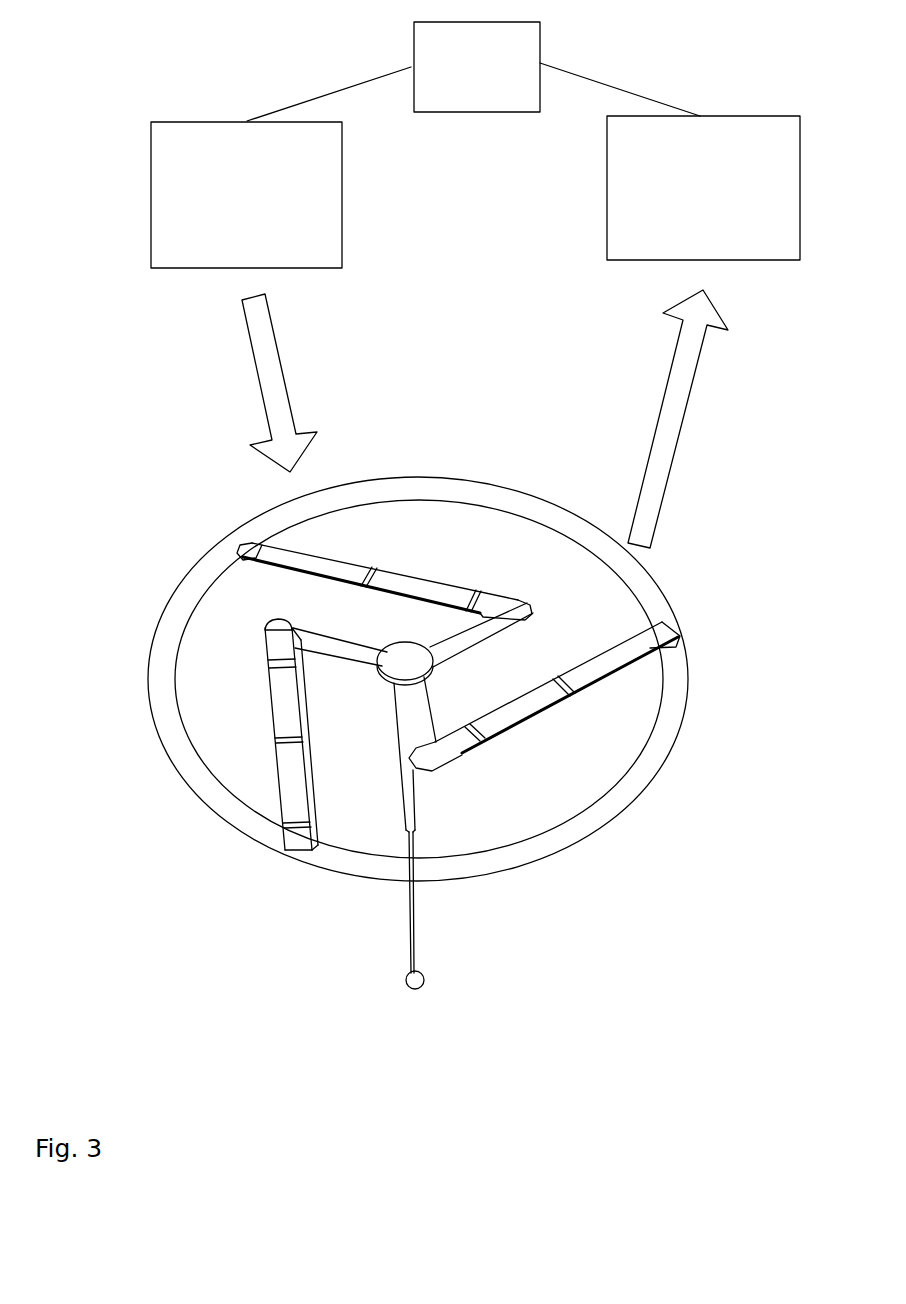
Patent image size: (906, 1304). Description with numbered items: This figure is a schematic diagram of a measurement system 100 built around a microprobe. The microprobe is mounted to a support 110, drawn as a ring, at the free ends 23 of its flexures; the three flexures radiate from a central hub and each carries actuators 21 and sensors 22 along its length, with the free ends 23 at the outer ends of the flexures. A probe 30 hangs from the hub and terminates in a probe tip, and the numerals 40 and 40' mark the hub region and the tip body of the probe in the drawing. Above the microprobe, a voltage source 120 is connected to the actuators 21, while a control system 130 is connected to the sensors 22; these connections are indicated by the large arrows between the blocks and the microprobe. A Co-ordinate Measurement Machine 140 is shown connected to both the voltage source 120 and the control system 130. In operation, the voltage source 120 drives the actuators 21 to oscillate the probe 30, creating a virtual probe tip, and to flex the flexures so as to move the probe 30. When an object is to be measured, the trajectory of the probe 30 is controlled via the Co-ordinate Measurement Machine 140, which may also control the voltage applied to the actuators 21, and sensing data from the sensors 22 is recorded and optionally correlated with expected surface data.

The actuator 21 is at (332, 570).
The sensor 22 is at (262, 547).
The free end 23 is at (258, 545).
The probe 30 is at (403, 818).
The hub / weight 40 is at (321, 785).
The weight body 40' is at (389, 1028).
The measurement system 100 is at (473, 150).
The support 110 is at (180, 597).
The voltage source 120 is at (163, 213).
The control system 130 is at (623, 247).
The coordinate measurement machine 140 is at (477, 96).